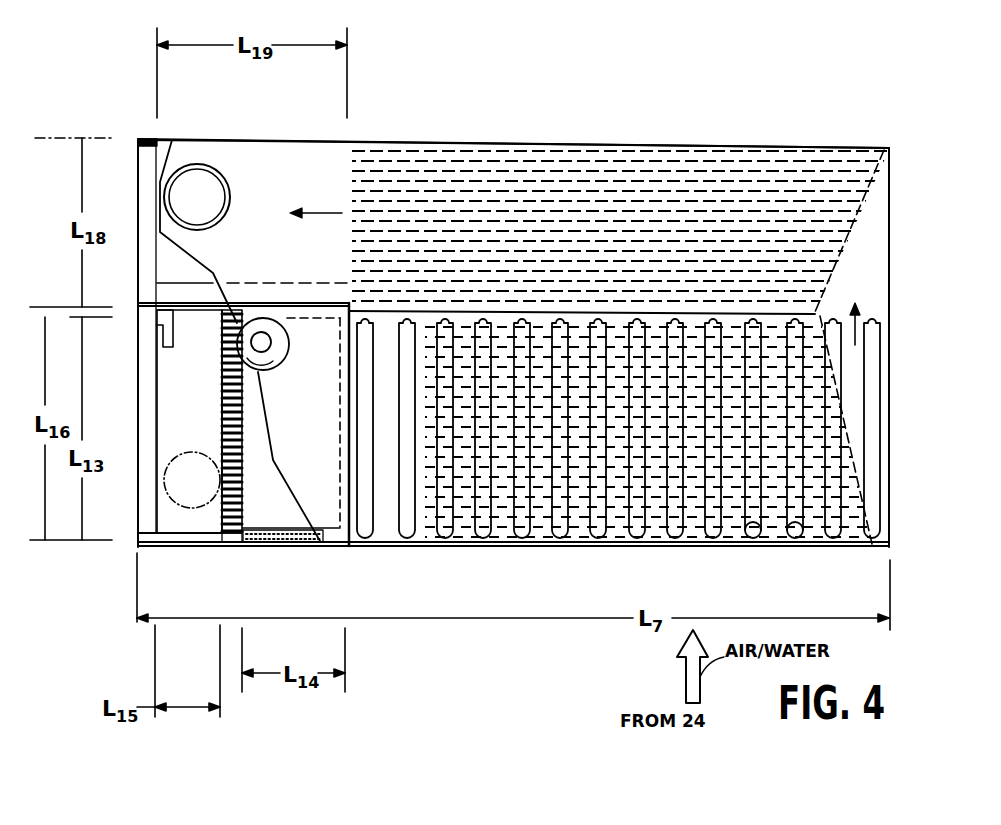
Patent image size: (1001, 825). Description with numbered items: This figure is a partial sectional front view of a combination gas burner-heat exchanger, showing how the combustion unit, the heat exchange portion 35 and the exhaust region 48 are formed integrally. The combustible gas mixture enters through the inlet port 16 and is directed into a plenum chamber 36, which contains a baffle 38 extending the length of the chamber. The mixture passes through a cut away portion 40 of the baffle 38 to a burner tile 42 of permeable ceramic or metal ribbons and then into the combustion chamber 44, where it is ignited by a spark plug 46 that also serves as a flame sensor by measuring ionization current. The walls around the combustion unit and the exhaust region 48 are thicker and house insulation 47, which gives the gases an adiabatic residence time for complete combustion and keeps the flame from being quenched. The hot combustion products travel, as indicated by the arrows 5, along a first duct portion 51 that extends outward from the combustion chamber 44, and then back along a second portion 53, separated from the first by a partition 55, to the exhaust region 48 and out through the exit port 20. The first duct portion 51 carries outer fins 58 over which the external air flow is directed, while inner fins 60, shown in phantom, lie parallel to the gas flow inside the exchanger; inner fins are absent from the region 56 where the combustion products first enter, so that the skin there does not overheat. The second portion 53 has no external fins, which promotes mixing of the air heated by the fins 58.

The arrows 5 is at (328, 220).
The inlet port 16 is at (182, 466).
The exit port 20 is at (207, 198).
The heat exchange portion 35 is at (664, 110).
The plenum chamber 36 is at (212, 548).
The baffle 38 is at (211, 390).
The cut away portion 40 is at (158, 318).
The burner tile 42 is at (246, 548).
The combustion chamber 44 is at (272, 488).
The spark plug 46 is at (286, 350).
The insulation 47 is at (337, 548).
The exhaust region 48 is at (262, 128).
The first duct portion 51 is at (602, 549).
The second portion 53 is at (692, 143).
The partition 55 is at (468, 311).
The region 56 is at (405, 556).
The outer fins 58 is at (808, 540).
The inner fins 60 is at (582, 180).